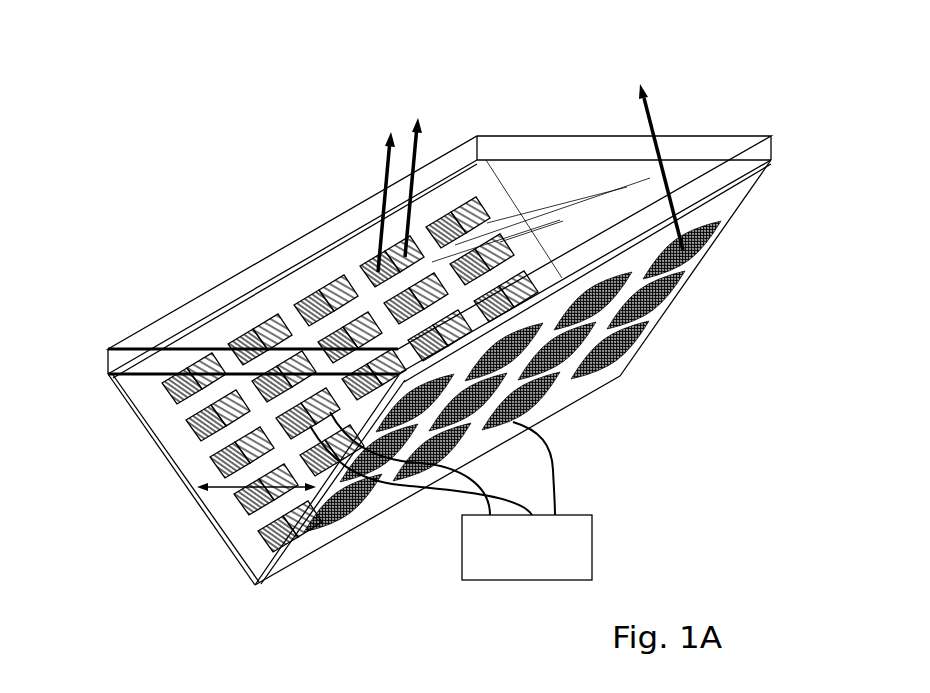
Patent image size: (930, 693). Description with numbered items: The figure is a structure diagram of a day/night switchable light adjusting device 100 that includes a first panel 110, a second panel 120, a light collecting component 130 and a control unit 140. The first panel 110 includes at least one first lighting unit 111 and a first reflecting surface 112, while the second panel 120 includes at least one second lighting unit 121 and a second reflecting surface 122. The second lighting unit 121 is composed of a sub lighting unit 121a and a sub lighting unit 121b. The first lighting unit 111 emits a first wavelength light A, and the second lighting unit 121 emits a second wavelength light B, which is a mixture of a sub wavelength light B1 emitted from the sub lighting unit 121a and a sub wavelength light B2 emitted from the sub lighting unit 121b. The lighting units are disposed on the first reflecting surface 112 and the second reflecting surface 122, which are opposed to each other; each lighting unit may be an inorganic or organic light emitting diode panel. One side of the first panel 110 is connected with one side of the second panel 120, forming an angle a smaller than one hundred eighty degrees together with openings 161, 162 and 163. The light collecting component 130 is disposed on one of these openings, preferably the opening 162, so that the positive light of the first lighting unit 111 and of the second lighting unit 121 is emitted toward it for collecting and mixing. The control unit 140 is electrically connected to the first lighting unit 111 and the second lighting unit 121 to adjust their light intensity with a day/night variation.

The day/night switchable light adjusting device 100 is at (136, 57).
The first panel 110 is at (513, 404).
The first lighting unit 111 is at (622, 386).
The first reflecting surface 112 is at (275, 574).
The second panel 120 is at (280, 366).
The second lighting unit 121 is at (345, 350).
The sub lighting unit 121a is at (240, 333).
The sub lighting unit 121b is at (277, 320).
The second reflecting surface 122 is at (188, 487).
The light collecting component 130 is at (458, 206).
The control unit 140 is at (451, 496).
The opening 161 is at (152, 412).
The opening 162 is at (344, 246).
The opening 163 is at (696, 152).
The first wavelength light A is at (654, 155).
The second wavelength light B is at (427, 89).
The sub wavelength light B1 is at (383, 185).
The sub wavelength light B2 is at (423, 171).
The angle a is at (192, 467).